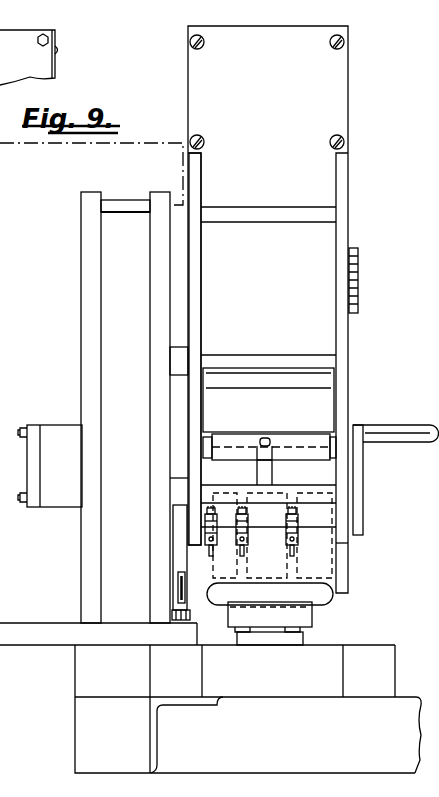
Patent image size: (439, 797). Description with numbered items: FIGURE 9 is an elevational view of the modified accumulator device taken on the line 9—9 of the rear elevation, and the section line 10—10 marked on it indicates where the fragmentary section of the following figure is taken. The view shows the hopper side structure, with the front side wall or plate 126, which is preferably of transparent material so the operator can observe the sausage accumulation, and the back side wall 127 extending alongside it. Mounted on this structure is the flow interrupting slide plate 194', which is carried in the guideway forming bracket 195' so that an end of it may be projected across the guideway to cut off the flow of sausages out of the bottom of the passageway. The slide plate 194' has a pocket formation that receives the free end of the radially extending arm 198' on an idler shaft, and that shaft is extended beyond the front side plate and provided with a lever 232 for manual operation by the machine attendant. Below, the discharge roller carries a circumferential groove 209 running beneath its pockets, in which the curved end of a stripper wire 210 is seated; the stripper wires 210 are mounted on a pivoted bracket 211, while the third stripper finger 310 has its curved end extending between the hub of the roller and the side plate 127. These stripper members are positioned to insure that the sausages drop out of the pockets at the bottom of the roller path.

The section line 9— 9 is at (85, 8).
The section line 10— 10 is at (247, 398).
The front side wall 126 is at (345, 170).
The back side wall 127 is at (190, 163).
The slide plate 194' is at (268, 404).
The guideway forming bracket 195' is at (221, 449).
The radially extending arm 198' is at (292, 467).
The circumferential groove 209 is at (282, 582).
The stripper wire 210 is at (297, 545).
The pivoted bracket 211 is at (203, 527).
The lever 232 is at (360, 467).
The stripper finger 310 is at (205, 553).